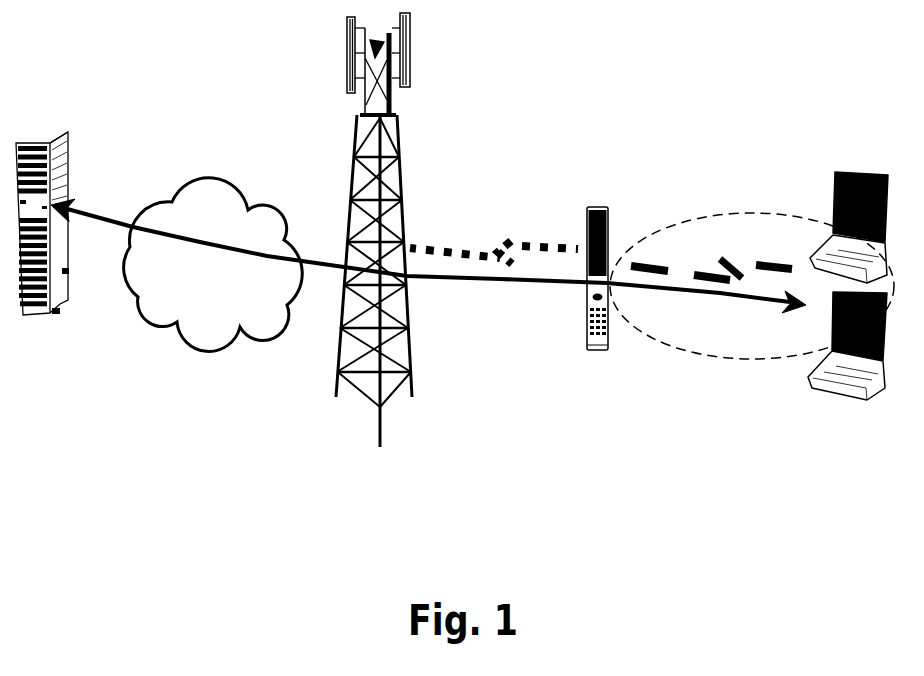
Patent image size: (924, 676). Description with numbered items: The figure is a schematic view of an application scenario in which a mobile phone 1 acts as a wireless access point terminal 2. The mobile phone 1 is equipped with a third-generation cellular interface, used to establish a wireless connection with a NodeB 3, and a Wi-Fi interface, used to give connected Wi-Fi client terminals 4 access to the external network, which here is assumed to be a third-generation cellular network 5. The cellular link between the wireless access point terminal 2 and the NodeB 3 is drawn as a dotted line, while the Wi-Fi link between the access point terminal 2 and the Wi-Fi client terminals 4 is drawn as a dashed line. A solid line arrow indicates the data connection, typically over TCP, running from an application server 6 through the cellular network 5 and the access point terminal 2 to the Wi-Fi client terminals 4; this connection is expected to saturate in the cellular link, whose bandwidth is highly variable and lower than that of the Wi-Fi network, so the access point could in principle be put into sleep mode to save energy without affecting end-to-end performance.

The mobile phone 1 is at (574, 219).
The wireless access point terminal 2 is at (598, 207).
The NodeB 3 is at (353, 127).
The Wi-Fi client terminals 4 is at (847, 172).
The 3G network 5 is at (213, 305).
The application server 6 is at (57, 148).